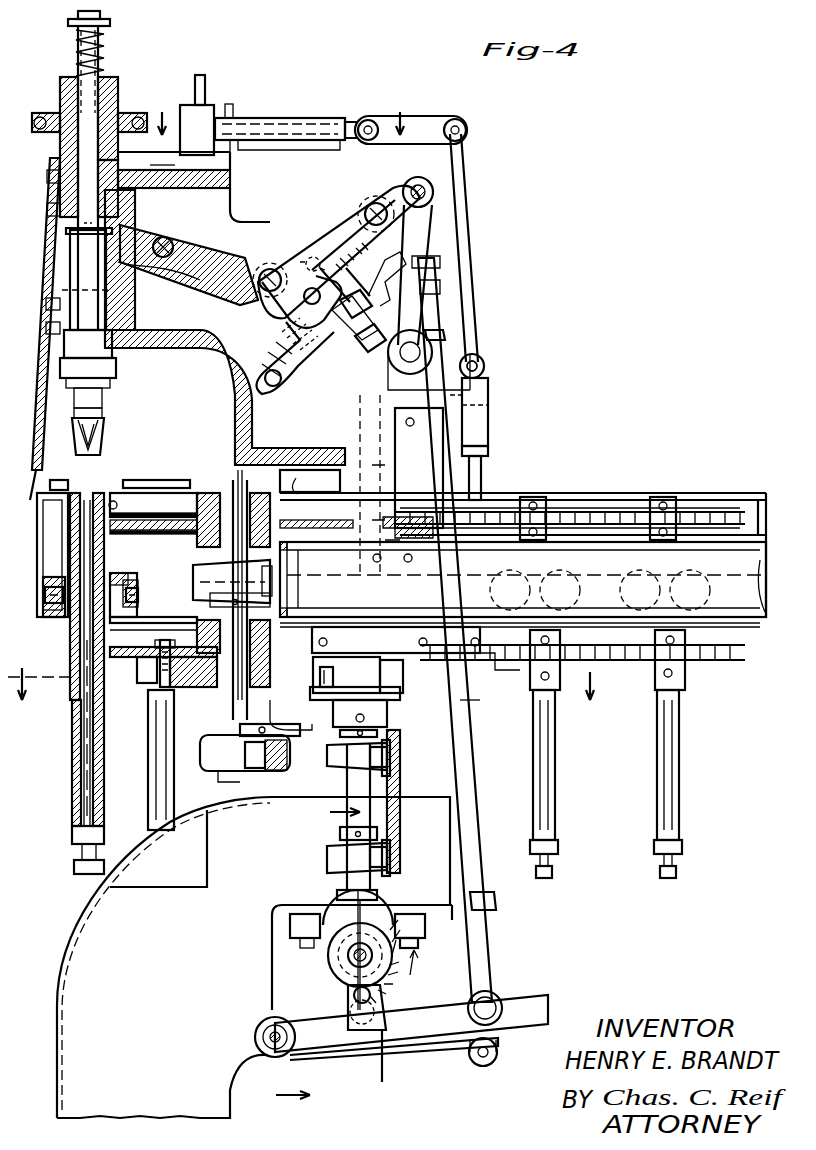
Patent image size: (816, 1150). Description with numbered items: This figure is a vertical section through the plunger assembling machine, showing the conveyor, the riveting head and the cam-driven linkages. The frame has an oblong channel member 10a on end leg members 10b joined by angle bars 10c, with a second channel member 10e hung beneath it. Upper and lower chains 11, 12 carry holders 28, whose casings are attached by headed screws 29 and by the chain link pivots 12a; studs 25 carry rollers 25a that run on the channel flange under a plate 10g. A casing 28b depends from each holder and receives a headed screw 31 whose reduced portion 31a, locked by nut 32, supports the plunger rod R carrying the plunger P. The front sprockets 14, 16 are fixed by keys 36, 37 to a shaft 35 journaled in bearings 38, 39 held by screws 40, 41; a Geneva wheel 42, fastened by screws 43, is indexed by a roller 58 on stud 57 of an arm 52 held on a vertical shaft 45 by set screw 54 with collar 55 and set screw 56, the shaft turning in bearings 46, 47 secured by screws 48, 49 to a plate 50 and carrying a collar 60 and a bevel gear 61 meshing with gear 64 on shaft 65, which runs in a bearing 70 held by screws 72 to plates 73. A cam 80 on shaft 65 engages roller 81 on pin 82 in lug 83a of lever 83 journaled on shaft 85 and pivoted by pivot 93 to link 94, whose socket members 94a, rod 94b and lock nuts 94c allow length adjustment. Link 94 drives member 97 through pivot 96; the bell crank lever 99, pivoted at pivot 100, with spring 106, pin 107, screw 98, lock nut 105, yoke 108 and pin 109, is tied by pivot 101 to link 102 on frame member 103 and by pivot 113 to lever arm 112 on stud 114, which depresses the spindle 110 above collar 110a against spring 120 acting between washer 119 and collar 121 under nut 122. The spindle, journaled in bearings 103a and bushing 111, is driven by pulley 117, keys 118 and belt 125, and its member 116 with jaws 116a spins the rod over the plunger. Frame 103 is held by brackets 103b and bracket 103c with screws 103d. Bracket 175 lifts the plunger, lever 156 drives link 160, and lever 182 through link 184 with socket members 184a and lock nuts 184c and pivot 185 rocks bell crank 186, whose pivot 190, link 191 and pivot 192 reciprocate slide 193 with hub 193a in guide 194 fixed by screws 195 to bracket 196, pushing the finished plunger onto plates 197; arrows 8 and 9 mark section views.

The knob 122 is at (78, 16).
The cap plate 121 is at (110, 23).
The spring 120 is at (104, 68).
The housing wall 119 is at (60, 88).
The housing wall 118 is at (62, 100).
The flange 117 is at (120, 95).
The flange 125 is at (32, 126).
The bearing sleeve 111 is at (118, 200).
The arm 196 is at (220, 188).
The bolt 103d is at (46, 175).
The frame plate 103a is at (58, 200).
The frame plate lower portion 103c is at (46, 398).
The section line 8 is at (277, 124).
The spindle 110 is at (102, 302).
The spindle collar 110a is at (135, 262).
The housing 103 is at (235, 408).
The tool holder 116 is at (102, 413).
The tool 116a is at (102, 434).
The work piece P is at (105, 456).
The arm 114 is at (165, 228).
The pivot screw 112 is at (218, 275).
The arm edge 113 is at (265, 296).
The link 107 is at (333, 236).
The pivot 108 is at (274, 290).
The pivot 100 is at (372, 204).
The link edge 99 is at (348, 214).
The pivot 109 is at (310, 258).
The spring 106 is at (364, 262).
The nut 105 is at (350, 330).
The nut 98 is at (372, 352).
The lever 101 is at (302, 320).
The lever arm 102 is at (280, 384).
The lever 97 is at (404, 182).
The pivot pin 96 is at (428, 192).
The link 186 is at (462, 158).
The pivot 190 is at (465, 126).
The link 191 is at (430, 116).
The pivot 192 is at (368, 118).
The rod end 193a is at (352, 118).
The rod 193 is at (290, 110).
The rod 194 is at (284, 142).
The block 195 is at (228, 104).
The bracket 197 is at (236, 156).
The link bar 94a is at (440, 290).
The clamp 94c is at (446, 336).
The pivot 94b is at (432, 348).
The link 94 is at (478, 812).
The pivot pin 185 is at (485, 366).
The cylinder 184a is at (480, 414).
The cylinder end 184c is at (490, 448).
The piston rod 184 is at (482, 470).
The frame portion 103b is at (362, 430).
The table rail 10a is at (740, 493).
The chain 11 is at (740, 530).
The screw 29 is at (540, 497).
The table beam 10e is at (300, 598).
The bearing 25a is at (48, 577).
The bolt 25 is at (42, 612).
The lower chain 12 is at (746, 652).
The bracket 28 is at (686, 690).
The section line 16 is at (305, 697).
The column 28b is at (698, 810).
The nut 32 is at (684, 842).
The nut 31 is at (678, 868).
The rod 31a is at (84, 782).
The rod axis R is at (86, 706).
The plate 14 is at (148, 518).
The block 10g is at (126, 578).
The plate 38 is at (196, 566).
The shaft 40 is at (232, 583).
The bearing block 36 is at (226, 490).
The rod 35 is at (246, 492).
The bracket 175 is at (316, 497).
The shaft 37 is at (248, 702).
The bracket 42 is at (200, 687).
The block 12a is at (150, 683).
The bolt 43 is at (160, 690).
The bracket 41 is at (250, 752).
The nut 39 is at (216, 770).
The plate 160 is at (336, 648).
The table portion 10c is at (410, 628).
The block 58 is at (346, 675).
The plate 52 is at (400, 696).
The block 54 is at (387, 718).
The pin 56 is at (364, 733).
The washer 55 is at (340, 736).
The bracket 57 is at (291, 715).
The shaft 45 is at (347, 786).
The roller 46 is at (330, 760).
The bearing 48 is at (364, 758).
The plate 50 is at (400, 808).
The section line 9 is at (318, 954).
The collar 60 is at (340, 834).
The roller 47 is at (316, 856).
The bearing 49 is at (334, 860).
The cover 61 is at (380, 904).
The frame 70 is at (290, 924).
The bearing 73 is at (426, 916).
The screw 72 is at (418, 944).
The gear 65 is at (330, 962).
The hub 80 is at (348, 950).
The gear teeth 64 is at (416, 972).
The shaft 81 is at (378, 994).
The link 82 is at (348, 1000).
The arm 83 is at (446, 1010).
The arm portion 83a is at (394, 1066).
The bar 182 is at (434, 1052).
The pivot 85 is at (262, 1034).
The pivot 93 is at (500, 992).
The roller 156 is at (516, 1012).
The base 10b is at (57, 1060).